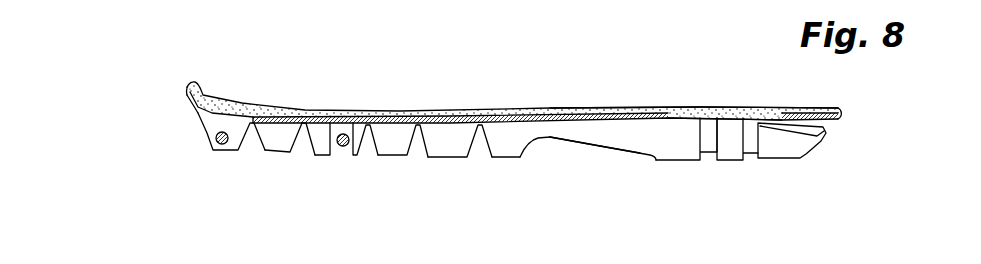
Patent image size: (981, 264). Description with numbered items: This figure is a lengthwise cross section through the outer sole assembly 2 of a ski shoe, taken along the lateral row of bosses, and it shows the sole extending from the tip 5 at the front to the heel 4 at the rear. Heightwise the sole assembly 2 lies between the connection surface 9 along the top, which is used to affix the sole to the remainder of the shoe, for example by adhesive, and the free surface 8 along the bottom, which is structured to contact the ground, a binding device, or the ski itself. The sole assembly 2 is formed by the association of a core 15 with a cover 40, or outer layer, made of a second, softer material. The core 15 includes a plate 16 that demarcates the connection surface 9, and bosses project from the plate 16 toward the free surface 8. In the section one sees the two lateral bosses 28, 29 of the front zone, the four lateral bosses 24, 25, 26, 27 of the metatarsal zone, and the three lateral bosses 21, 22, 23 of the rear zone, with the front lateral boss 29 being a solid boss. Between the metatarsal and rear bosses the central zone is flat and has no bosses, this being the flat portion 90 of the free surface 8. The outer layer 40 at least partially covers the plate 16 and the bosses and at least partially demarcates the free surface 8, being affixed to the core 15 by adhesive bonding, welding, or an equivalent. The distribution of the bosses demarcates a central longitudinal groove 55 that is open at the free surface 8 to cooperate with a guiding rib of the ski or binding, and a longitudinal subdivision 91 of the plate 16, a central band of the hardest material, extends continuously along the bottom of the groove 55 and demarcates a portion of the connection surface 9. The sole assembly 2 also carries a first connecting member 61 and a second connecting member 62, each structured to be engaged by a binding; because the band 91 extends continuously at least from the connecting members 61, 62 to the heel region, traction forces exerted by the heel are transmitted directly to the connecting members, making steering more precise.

The outer sole assembly 2 is at (372, 97).
The heel 4 is at (843, 113).
The tip 5 is at (188, 92).
The free surface 8 is at (543, 138).
The connection surface 9 is at (500, 108).
The core 15 is at (562, 112).
The plate 16 is at (685, 106).
The lateral boss 21 is at (790, 147).
The lateral boss 22 is at (733, 147).
The lateral boss 23 is at (682, 150).
The lateral boss 24 is at (513, 145).
The lateral boss 25 is at (452, 147).
The lateral boss 26 is at (393, 148).
The lateral boss 27 is at (327, 140).
The lateral boss 28 is at (278, 140).
The front lateral boss 29 is at (210, 127).
The cover 40 is at (581, 121).
The central longitudinal groove 55 is at (608, 130).
The first connecting member 61 is at (222, 150).
The second connecting member 62 is at (342, 148).
The flat portion 90 is at (617, 147).
The longitudinal subdivision 91 is at (697, 118).